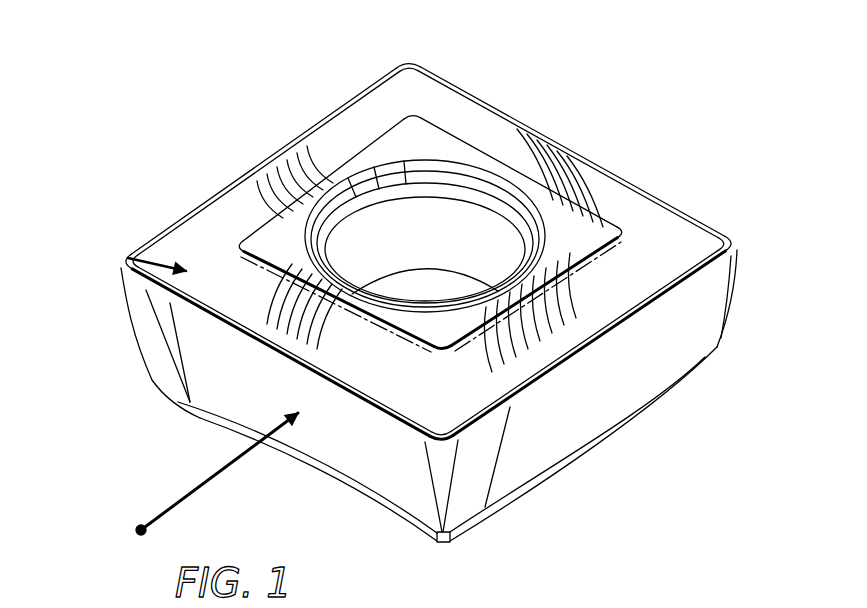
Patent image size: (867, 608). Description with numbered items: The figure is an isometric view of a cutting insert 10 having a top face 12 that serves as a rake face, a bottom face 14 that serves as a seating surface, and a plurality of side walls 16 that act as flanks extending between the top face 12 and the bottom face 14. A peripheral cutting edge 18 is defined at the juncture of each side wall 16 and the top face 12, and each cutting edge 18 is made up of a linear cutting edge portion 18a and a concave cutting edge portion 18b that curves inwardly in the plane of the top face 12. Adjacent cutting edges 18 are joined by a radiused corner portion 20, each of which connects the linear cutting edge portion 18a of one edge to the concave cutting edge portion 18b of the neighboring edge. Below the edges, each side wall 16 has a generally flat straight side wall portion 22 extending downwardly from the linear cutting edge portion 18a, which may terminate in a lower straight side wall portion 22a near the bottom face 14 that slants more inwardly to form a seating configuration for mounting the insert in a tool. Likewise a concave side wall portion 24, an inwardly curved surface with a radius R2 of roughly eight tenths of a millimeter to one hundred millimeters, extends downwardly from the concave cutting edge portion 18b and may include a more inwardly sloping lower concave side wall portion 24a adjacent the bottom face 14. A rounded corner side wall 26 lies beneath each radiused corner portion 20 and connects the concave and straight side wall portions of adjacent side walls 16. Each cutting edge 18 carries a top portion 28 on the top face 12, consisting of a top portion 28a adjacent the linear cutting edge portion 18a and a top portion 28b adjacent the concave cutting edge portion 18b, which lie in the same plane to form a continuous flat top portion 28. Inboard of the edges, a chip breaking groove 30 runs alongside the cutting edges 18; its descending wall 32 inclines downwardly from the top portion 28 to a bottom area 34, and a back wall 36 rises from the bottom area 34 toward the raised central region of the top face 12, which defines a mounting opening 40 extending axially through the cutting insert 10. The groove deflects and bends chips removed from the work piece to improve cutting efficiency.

The cutting insert 10 is at (703, 132).
The top face 12 is at (237, 182).
The bottom face 14 is at (675, 394).
The side walls 16 is at (127, 332).
The peripheral cutting edge 18 is at (327, 110).
The linear cutting edge portion 18a is at (401, 60).
The concave cutting edge portion 18b is at (560, 145).
The radiused corner portion 20 is at (417, 60).
The straight side wall portion 22 is at (157, 347).
The lower straight side wall portion 22a is at (177, 403).
The concave side wall portion 24 is at (310, 427).
The lower concave side wall portion 24a is at (310, 465).
The rounded corner side wall 26 is at (437, 467).
The top portion 28 is at (464, 82).
The top portion adjacent linear cutting edge portion 28a is at (368, 84).
The top portion adjacent concave cutting edge portion 28b is at (598, 168).
The chip breaking groove 30 is at (116, 258).
The descending wall 32 is at (731, 250).
The bottom area 34 is at (526, 395).
The back wall 36 is at (631, 256).
The mounting opening 40 is at (411, 297).
The radius of concave side wall portion R2 is at (200, 485).